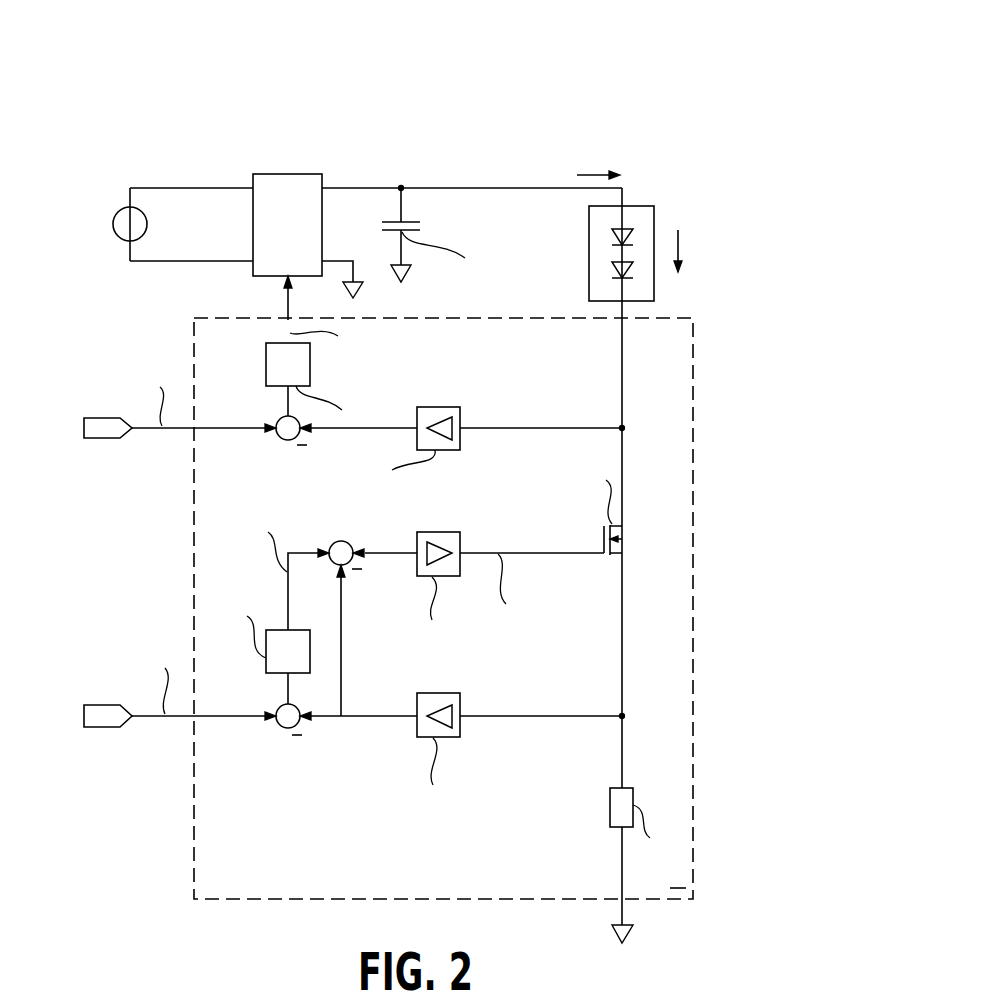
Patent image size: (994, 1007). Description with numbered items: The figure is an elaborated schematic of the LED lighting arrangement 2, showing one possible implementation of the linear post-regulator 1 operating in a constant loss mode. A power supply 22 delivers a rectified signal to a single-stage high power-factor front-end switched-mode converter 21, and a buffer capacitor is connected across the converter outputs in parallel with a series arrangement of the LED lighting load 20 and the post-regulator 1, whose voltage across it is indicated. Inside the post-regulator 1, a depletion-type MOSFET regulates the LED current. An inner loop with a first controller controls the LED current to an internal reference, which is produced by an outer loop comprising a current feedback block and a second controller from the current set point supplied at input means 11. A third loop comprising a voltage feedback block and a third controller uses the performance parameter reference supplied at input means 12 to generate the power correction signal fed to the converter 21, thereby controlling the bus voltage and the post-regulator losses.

The linear post-regulator 1 is at (693, 365).
The LED lighting arrangement 2 is at (561, 100).
The input means 11 is at (105, 727).
The input means 12 is at (100, 438).
The LED lighting load 20 is at (634, 206).
The switched-mode converter 21 is at (288, 174).
The power supply 22 is at (117, 212).